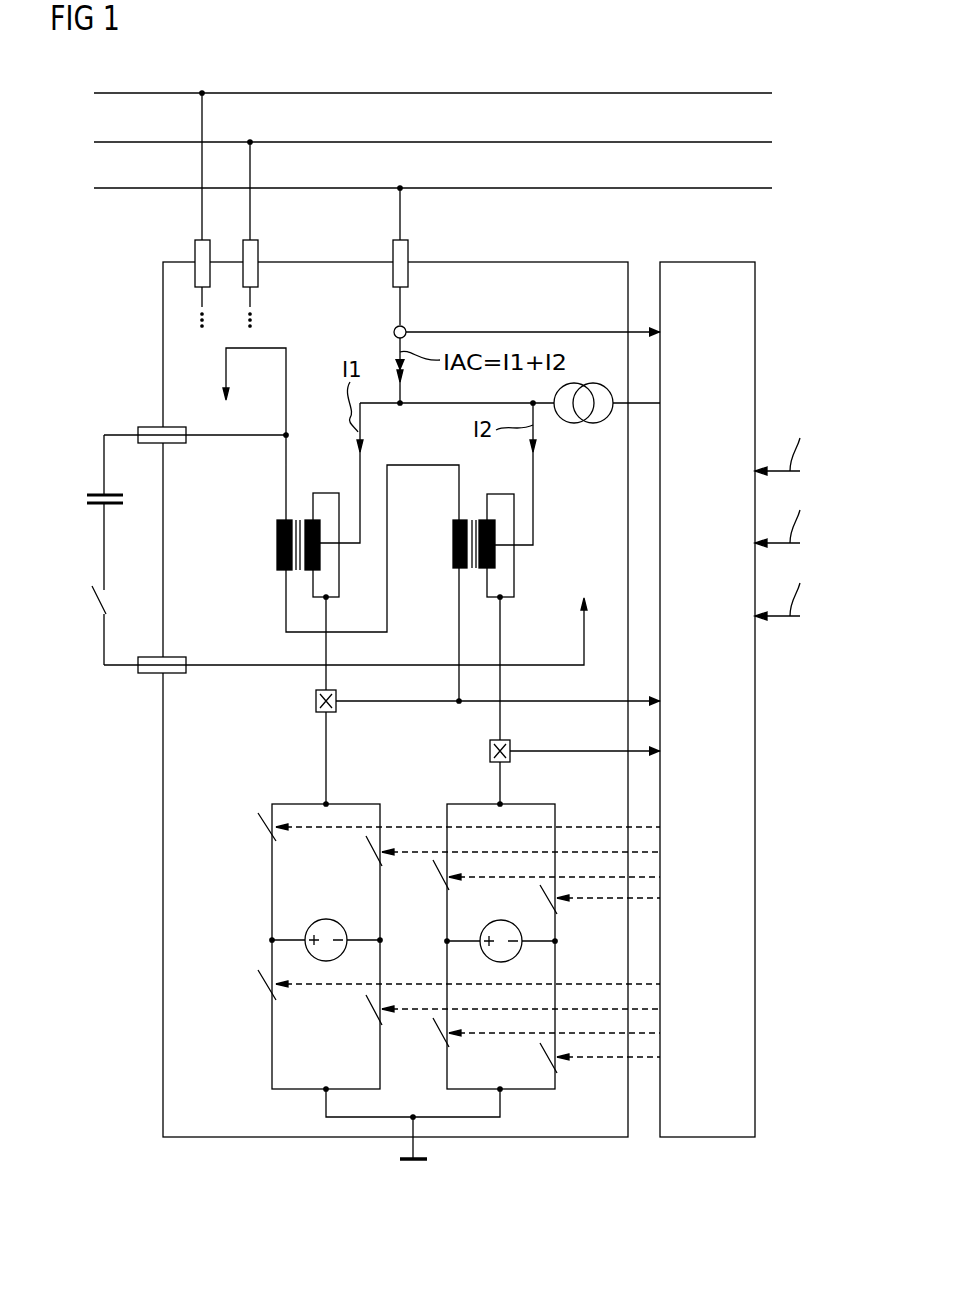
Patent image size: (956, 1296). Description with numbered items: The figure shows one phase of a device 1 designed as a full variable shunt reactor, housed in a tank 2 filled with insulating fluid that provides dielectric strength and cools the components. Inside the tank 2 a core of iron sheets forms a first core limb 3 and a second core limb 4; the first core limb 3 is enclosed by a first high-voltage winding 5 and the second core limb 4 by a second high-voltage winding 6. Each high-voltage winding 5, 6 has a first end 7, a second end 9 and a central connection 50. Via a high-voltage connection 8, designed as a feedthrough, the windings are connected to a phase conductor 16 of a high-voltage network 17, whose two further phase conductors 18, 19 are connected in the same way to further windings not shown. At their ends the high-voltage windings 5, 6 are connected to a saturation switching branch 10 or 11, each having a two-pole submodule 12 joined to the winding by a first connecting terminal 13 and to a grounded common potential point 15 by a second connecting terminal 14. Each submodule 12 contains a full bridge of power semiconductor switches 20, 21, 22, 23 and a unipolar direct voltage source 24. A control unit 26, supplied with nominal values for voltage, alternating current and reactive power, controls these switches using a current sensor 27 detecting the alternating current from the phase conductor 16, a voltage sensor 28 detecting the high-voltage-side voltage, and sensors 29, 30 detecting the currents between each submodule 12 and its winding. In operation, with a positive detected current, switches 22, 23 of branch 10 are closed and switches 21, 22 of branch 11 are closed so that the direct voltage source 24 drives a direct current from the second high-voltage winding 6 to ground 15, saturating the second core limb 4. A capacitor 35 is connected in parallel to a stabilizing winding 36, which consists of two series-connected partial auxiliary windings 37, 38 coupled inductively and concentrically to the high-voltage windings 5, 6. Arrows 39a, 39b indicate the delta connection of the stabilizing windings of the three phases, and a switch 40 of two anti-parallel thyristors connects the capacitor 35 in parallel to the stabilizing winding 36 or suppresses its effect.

The device 1 is at (138, 315).
The tank 2 is at (163, 878).
The first core limb 3 is at (288, 572).
The second core limb 4 is at (461, 570).
The first high-voltage winding 5 is at (322, 558).
The second high-voltage winding 6 is at (497, 557).
The first end 7 is at (312, 525).
The high-voltage connection 8 is at (195, 250).
The second end 9 is at (318, 578).
The saturation switching branch 10 is at (280, 796).
The saturation switching branch 11 is at (550, 795).
The two-pole submodule 12 is at (282, 1098).
The first connecting terminal 13 is at (327, 756).
The second connecting terminal 14 is at (365, 1117).
The common potential point 15 is at (414, 1165).
The phase conductor 16 is at (643, 189).
The high-voltage network 17 is at (356, 70).
The phase conductor 18 is at (760, 142).
The phase conductor 19 is at (578, 92).
The power semiconductor switch 20 is at (258, 825).
The power semiconductor switch 21 is at (258, 982).
The power semiconductor switch 22 is at (368, 849).
The power semiconductor switch 23 is at (368, 1007).
The direct voltage source 24 is at (326, 919).
The control unit 26 is at (712, 1138).
The current sensor 27 is at (393, 333).
The voltage sensor 28 is at (594, 423).
The sensor 29 is at (316, 701).
The sensor 30 is at (490, 751).
The capacitor 35 is at (98, 494).
The stabilizing winding 36 is at (280, 420).
The partial auxiliary winding 37 is at (277, 545).
The partial auxiliary winding 38 is at (453, 546).
The arrow 39a is at (274, 347).
The arrow 39b is at (584, 645).
The switch 40 is at (98, 606).
The central connection 50 is at (328, 532).